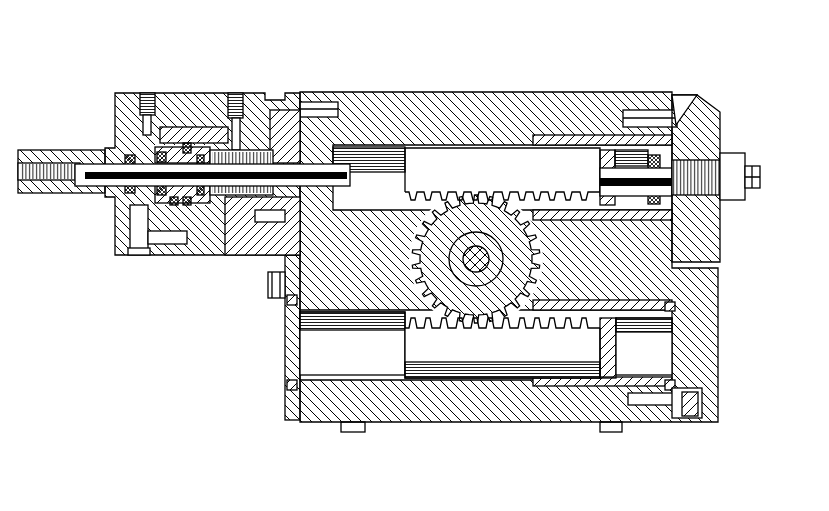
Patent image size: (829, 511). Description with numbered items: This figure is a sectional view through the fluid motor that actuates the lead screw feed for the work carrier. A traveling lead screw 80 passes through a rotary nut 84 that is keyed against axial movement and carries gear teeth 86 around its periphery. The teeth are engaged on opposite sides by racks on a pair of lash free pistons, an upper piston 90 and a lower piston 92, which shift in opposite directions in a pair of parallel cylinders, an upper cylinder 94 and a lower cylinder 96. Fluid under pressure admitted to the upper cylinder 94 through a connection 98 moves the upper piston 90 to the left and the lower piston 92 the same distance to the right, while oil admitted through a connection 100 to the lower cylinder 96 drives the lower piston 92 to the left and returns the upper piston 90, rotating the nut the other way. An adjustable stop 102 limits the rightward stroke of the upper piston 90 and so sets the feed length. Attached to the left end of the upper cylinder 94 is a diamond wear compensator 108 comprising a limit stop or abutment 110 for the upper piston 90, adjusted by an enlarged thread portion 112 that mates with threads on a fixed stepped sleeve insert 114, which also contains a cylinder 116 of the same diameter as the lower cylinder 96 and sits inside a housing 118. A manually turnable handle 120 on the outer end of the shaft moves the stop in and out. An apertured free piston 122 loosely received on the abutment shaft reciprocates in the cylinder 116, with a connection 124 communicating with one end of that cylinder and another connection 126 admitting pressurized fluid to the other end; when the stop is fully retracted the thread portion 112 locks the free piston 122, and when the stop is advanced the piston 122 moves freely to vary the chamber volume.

The diamond wear compensator 108 is at (258, 73).
The connection 124 is at (284, 112).
The housing 118 is at (172, 93).
The stepped sleeve insert 114 is at (213, 93).
The handle 120 is at (50, 158).
The free piston 122 is at (157, 202).
The connection 126 is at (140, 255).
The cylinder 116 is at (205, 230).
The enlarged thread portion 112 is at (244, 193).
The limit stop 110 is at (352, 171).
The lead screw 80 is at (470, 235).
The rotary nut 84 is at (415, 298).
The gear teeth 86 is at (437, 325).
The lower piston 92 is at (502, 348).
The lower cylinder 96 is at (644, 346).
The connection 100 is at (690, 388).
The upper piston 90 is at (502, 174).
The adjustable stop 102 is at (606, 178).
The upper cylinder 94 is at (630, 160).
The connection 98 is at (700, 107).